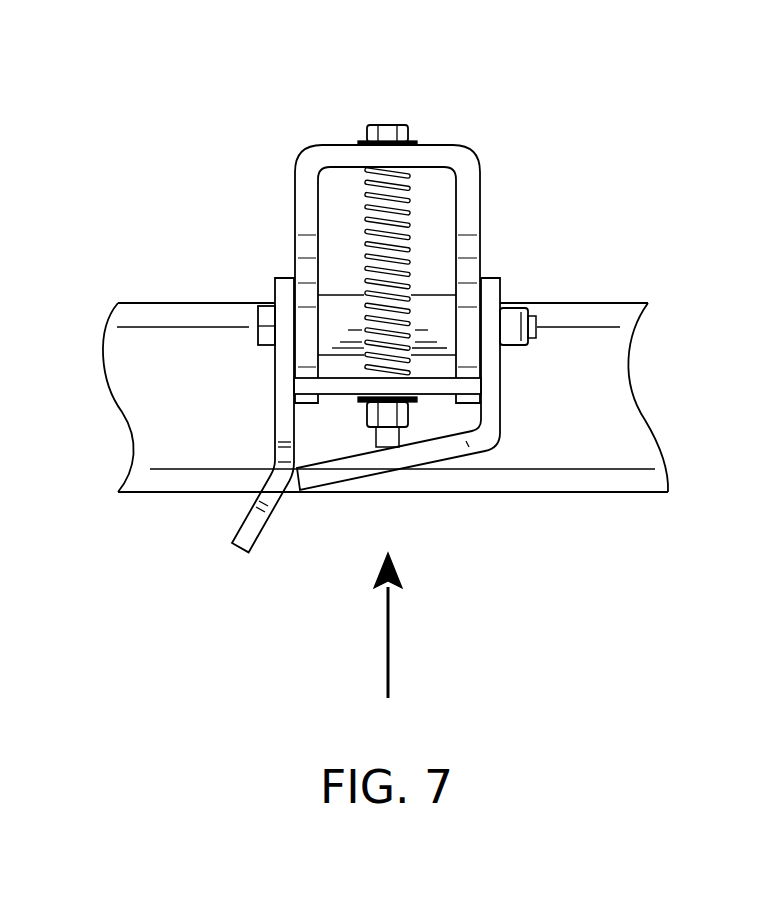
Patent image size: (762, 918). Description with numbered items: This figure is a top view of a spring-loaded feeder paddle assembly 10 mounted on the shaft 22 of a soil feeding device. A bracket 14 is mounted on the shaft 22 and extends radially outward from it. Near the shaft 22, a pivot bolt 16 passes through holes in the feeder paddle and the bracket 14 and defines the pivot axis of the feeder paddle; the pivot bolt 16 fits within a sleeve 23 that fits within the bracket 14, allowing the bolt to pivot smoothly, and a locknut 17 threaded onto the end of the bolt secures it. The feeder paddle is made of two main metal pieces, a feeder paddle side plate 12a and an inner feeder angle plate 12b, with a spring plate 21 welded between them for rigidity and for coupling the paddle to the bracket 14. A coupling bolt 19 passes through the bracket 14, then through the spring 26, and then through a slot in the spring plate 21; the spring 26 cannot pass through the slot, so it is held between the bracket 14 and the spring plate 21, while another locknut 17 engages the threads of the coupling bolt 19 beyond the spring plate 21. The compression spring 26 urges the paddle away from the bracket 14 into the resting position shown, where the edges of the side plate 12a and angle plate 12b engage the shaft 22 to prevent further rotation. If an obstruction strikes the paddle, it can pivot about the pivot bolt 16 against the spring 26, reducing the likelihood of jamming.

The feeder paddle assembly 10 is at (523, 206).
The feeder paddle side plate 12a is at (238, 543).
The inner feeder angle plate 12b is at (453, 445).
The bracket 14 is at (440, 153).
The pivot bolt 16 is at (265, 308).
The locknut 17 is at (513, 318).
The coupling bolt 19 is at (389, 129).
The spring plate 21 is at (305, 386).
The shaft 22 is at (623, 483).
The sleeve 23 is at (435, 310).
The spring 26 is at (365, 210).